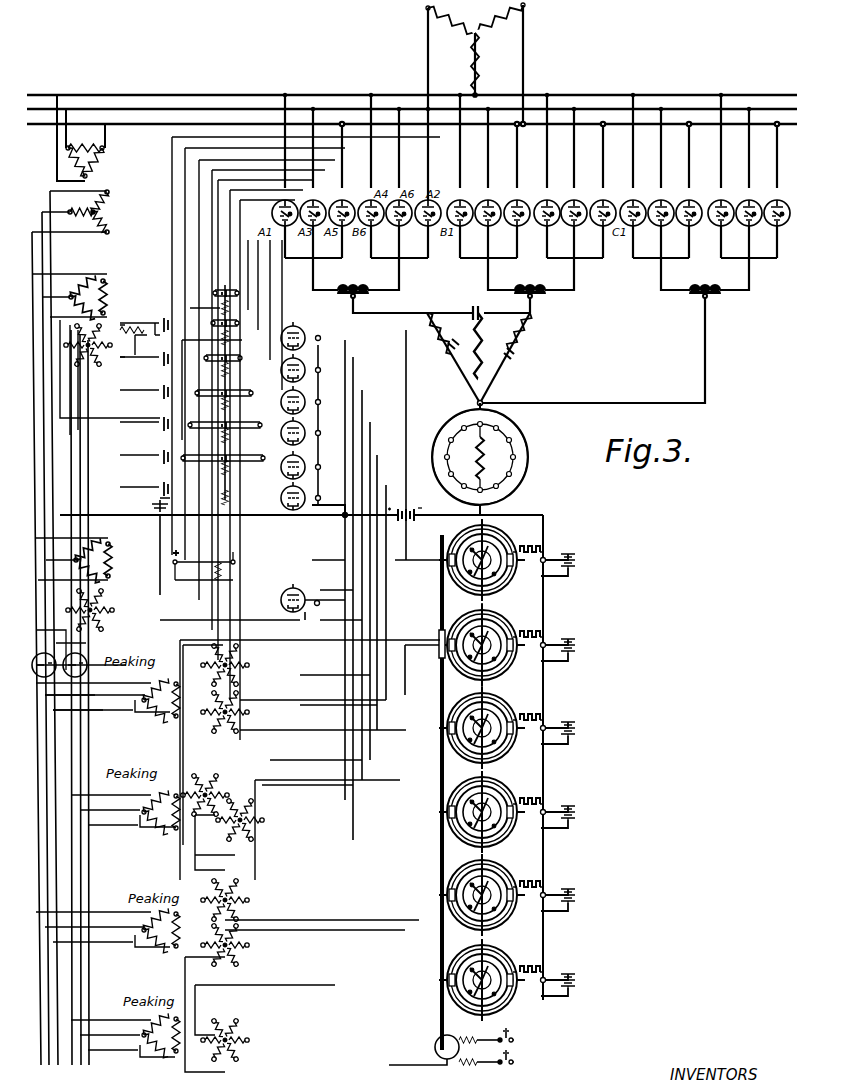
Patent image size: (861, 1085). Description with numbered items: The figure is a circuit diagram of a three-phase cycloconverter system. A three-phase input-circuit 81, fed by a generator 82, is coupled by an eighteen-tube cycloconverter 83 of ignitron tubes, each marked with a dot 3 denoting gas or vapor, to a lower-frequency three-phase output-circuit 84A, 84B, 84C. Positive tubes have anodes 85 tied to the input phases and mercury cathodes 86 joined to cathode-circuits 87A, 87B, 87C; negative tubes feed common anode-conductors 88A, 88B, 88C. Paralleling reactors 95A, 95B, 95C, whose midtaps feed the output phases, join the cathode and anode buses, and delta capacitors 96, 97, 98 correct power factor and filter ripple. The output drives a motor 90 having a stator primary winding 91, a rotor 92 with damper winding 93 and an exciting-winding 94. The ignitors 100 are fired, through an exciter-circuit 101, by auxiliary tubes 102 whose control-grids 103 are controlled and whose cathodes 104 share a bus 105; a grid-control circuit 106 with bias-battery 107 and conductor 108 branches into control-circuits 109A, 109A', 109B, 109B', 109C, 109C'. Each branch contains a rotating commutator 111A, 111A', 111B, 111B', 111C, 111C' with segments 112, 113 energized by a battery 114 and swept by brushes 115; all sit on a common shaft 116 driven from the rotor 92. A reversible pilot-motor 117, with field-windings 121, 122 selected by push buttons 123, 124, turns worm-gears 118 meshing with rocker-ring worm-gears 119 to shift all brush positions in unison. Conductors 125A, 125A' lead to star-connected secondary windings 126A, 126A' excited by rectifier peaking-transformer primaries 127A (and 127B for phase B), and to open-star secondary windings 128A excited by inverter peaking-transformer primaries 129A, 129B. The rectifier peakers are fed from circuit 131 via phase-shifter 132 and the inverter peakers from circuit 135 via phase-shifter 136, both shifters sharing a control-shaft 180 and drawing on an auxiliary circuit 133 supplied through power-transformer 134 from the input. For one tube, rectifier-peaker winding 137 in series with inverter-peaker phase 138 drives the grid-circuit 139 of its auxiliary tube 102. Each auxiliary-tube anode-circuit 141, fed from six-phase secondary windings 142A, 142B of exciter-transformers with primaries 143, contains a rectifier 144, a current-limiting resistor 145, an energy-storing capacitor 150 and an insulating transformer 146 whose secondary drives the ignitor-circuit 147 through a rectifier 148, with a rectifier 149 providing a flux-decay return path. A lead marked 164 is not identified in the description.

The three-phase input-circuit 81 is at (242, 118).
The generator 82 is at (504, 50).
The cycloconverter tubes 83 is at (623, 193).
The dot 3 is at (692, 208).
The output-circuit phase A conductor 84A is at (355, 301).
The output-circuit phase B conductor 84B is at (533, 301).
The output-circuit phase C conductor 84C is at (708, 311).
The anodes 85 is at (384, 229).
The mercury cathodes 86 is at (344, 209).
The common cathode-circuit 87A is at (313, 277).
The common cathode-circuit 87B is at (490, 261).
The common cathode-circuit 87C is at (665, 261).
The common anode-conductor 88A is at (398, 276).
The common anode-conductor 88B is at (576, 261).
The common anode-conductor 88C is at (751, 261).
The variable-speed three-phase motor 90 is at (454, 415).
The three-phase primary winding 91 is at (521, 332).
The rotor 92 is at (515, 431).
The squirrel-cage secondary or damper winding 93 is at (514, 450).
The direct-current exciting-winding 94 is at (468, 401).
The paralleling reactor 95A is at (353, 281).
The paralleling reactor 95B is at (530, 281).
The paralleling reactor 95C is at (705, 281).
The output-circuit capacitor 96 is at (478, 305).
The output-circuit capacitor 97 is at (508, 360).
The output-circuit capacitor 98 is at (448, 357).
The ignitors 100 is at (282, 213).
The exciter-circuit 101 is at (130, 318).
The auxiliary or exciter-tubes 102 is at (307, 337).
The control-grids 103 is at (301, 340).
The cathodes 104 is at (289, 508).
The common cathode-circuit or bus 105 is at (318, 390).
The grid-control circuit 106 is at (358, 525).
The negative bias-battery 107 is at (401, 508).
The conductor 108 is at (545, 528).
The branch control-circuit 109A is at (525, 658).
The branch control-circuit 109A' is at (527, 573).
The branch control-circuit 109B is at (525, 825).
The branch control-circuit 109B' is at (527, 741).
The branch control-circuit 109C is at (554, 951).
The branch control-circuit 109C' is at (527, 908).
The rotating commutator 111A is at (492, 644).
The rotating commutator 111A' is at (477, 557).
The rotating commutator 111B is at (492, 810).
The rotating commutator 111B' is at (494, 726).
The rotating commutator 111C is at (492, 977).
The rotating commutator 111C' is at (494, 893).
The insulated conducting segment 112 is at (478, 620).
The insulated conducting segment 113 is at (470, 668).
The battery 114 is at (582, 558).
The brushes 115 is at (440, 643).
The common shaft 116 is at (482, 506).
The reversible pilot-motor 117 is at (440, 1035).
The worm-gears 118 is at (440, 549).
The worm-gears 119 is at (497, 541).
The field-winding 121 is at (478, 1038).
The field-winding 122 is at (473, 1066).
The push button 123 is at (515, 1040).
The push button 124 is at (515, 1062).
The circuit-conductor 125A is at (419, 670).
The circuit-conductor 125A' is at (418, 570).
The three-phase star-connected secondary windings 126A is at (243, 712).
The three-phase star-connected secondary windings 126A' is at (233, 744).
The three-phase-connected primary windings 127A is at (108, 699).
The three-phase-connected primary windings 127B is at (108, 929).
The open-star six-phase-connected secondary windings 128A is at (243, 829).
The three-phase-connected primary windings 129A is at (125, 810).
The three-phase-connected primary windings 129B is at (125, 1034).
The three-phase input-frequency circuit 131 is at (46, 755).
The phase-shifter 132 is at (83, 649).
The auxiliary input-frequency circuit 133 is at (36, 513).
The auxiliary power-transformer 134 is at (95, 138).
The three-phase input-frequency circuit 135 is at (61, 782).
The phase-shifter 136 is at (87, 663).
The rectifier-peaker winding 137 is at (228, 729).
The inverter-peaker phase 138 is at (205, 790).
The grid-circuit 139 is at (370, 355).
The anode-circuit 141 is at (273, 326).
The six-phase star-connected secondary windings 142A is at (110, 377).
The six-phase star-connected secondary windings 142B is at (100, 612).
The three-phase primary windings 143 is at (110, 291).
The rectifier 144 is at (118, 320).
The current-limiting resistor 145 is at (136, 393).
The insulating transformer 146 is at (240, 310).
The ignitor-circuit 147 is at (228, 208).
The rectifier 148 is at (214, 286).
The rectifier 149 is at (240, 294).
The energy-storing capacitor 150 is at (151, 496).
The conductor 164 is at (312, 348).
The common control-shaft 180 is at (87, 672).